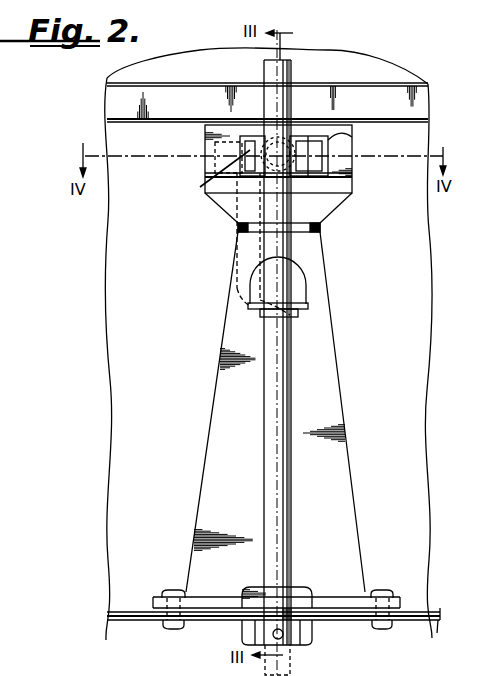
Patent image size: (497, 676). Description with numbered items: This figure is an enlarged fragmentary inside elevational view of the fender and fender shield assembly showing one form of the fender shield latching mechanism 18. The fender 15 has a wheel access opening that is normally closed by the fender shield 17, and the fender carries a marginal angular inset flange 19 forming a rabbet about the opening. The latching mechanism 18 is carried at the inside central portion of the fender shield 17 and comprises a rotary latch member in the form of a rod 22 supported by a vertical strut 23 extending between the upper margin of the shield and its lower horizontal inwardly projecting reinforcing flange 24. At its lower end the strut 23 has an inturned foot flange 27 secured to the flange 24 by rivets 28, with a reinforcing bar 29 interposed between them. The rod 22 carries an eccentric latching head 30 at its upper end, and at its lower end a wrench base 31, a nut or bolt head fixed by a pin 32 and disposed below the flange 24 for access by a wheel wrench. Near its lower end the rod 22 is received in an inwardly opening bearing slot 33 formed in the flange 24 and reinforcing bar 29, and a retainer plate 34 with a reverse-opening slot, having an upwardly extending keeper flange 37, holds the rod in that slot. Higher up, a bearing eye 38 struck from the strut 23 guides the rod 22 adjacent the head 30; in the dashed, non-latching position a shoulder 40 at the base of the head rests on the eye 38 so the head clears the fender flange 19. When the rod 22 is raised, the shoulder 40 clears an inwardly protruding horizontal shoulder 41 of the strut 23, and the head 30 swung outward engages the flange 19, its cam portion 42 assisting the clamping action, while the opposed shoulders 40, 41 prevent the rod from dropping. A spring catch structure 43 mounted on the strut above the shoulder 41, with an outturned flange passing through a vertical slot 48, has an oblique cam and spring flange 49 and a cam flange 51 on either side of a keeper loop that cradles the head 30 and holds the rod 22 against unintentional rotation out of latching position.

The fender 15 is at (378, 67).
The fender shield 17 is at (415, 369).
The latching mechanism 18 is at (372, 331).
The marginal angular inset flange 19 is at (424, 108).
The rod 22 is at (272, 450).
The vertical strut 23 is at (357, 476).
The horizontal inwardly projecting reinforcing flange 24 is at (437, 624).
The inturned foot flange 27 is at (355, 591).
The rivets 28 is at (173, 590).
The reinforcing bar 29 is at (428, 613).
The latching head 30 is at (272, 136).
The wrench base 31 is at (312, 635).
The pin 32 is at (283, 637).
The slot 33 is at (289, 619).
The retainer plate 34 is at (397, 607).
The reinforcing keeper flange 37 is at (292, 600).
The bearing eye 38 is at (300, 308).
The shoulder 40 is at (240, 294).
The horizontal shoulder 41 is at (320, 227).
The cam portion 42 is at (291, 75).
The spring catch structure 43 is at (335, 151).
The vertical slot 48 is at (302, 150).
The cam and spring flange 49 is at (352, 137).
The cam flange 51 is at (200, 187).